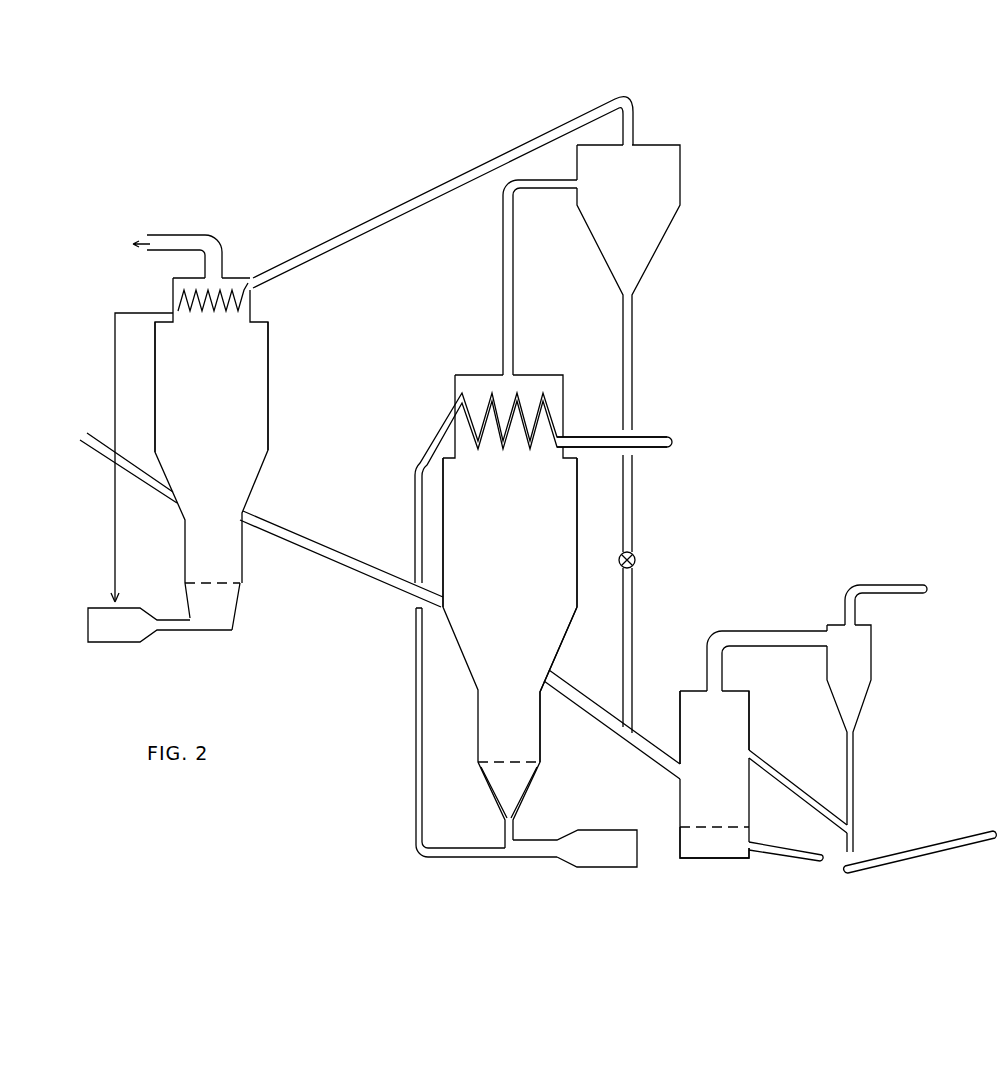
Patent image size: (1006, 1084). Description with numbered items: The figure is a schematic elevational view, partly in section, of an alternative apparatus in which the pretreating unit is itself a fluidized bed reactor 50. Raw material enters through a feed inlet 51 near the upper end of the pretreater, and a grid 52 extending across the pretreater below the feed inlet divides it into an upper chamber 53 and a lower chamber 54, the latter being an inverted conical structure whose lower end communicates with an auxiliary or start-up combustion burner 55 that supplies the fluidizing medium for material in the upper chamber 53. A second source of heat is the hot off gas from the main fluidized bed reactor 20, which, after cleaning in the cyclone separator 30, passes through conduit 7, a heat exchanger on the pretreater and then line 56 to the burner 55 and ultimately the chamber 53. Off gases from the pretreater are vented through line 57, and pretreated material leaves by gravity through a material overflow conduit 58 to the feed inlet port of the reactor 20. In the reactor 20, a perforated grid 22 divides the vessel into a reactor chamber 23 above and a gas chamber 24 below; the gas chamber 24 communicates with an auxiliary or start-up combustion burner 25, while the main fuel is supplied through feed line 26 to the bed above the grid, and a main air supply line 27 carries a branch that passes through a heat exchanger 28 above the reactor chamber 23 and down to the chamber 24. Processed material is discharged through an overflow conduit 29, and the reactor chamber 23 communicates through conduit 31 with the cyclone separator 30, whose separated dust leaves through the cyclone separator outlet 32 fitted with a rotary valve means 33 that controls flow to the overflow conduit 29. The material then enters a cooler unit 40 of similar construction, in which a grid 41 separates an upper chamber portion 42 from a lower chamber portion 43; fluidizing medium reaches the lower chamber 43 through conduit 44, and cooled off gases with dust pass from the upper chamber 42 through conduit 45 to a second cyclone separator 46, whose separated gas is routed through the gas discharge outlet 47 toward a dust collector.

The conduit 7 is at (347, 228).
The fluidized bed reactor 20 is at (578, 531).
The perforated grid 22 is at (485, 758).
The reactor chamber 23 is at (509, 529).
The gas chamber 24 is at (509, 792).
The auxiliary or start-up combustion burner 25 is at (575, 848).
The feed line 26 is at (561, 685).
The main air supply line 27 is at (646, 437).
The heat exchanger 28 is at (526, 372).
The overflow conduit 29 is at (590, 699).
The cyclone separator 30 is at (683, 185).
The conduit 31 is at (514, 293).
The cyclone separator outlet 32 is at (413, 669).
The rotary valve means 33 is at (634, 556).
The cooler unit 40 is at (750, 738).
The grid 41 is at (698, 826).
The upper chamber portion 42 is at (729, 734).
The lower chamber portion 43 is at (714, 842).
The conduit 44 is at (772, 852).
The conduit 45 is at (735, 632).
The second cyclone separator 46 is at (862, 668).
The gas discharge outlet 47 is at (872, 584).
The fluidized bed reactor 50 is at (272, 385).
The feed inlet 51 is at (104, 452).
The grid 52 is at (226, 583).
The upper chamber 53 is at (216, 396).
The lower chamber 54 is at (222, 619).
The auxiliary or start-up combustion burner 55 is at (380, 529).
The line 56 is at (107, 374).
The line 57 is at (150, 240).
The material overflow conduit 58 is at (280, 527).